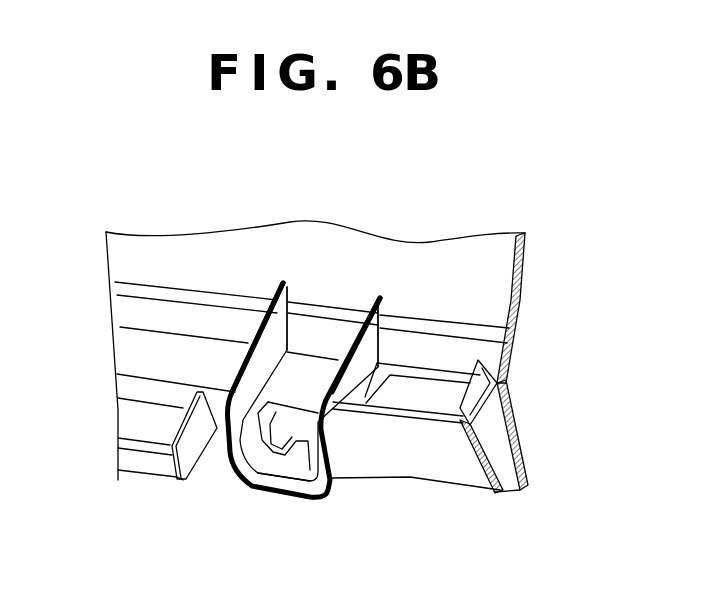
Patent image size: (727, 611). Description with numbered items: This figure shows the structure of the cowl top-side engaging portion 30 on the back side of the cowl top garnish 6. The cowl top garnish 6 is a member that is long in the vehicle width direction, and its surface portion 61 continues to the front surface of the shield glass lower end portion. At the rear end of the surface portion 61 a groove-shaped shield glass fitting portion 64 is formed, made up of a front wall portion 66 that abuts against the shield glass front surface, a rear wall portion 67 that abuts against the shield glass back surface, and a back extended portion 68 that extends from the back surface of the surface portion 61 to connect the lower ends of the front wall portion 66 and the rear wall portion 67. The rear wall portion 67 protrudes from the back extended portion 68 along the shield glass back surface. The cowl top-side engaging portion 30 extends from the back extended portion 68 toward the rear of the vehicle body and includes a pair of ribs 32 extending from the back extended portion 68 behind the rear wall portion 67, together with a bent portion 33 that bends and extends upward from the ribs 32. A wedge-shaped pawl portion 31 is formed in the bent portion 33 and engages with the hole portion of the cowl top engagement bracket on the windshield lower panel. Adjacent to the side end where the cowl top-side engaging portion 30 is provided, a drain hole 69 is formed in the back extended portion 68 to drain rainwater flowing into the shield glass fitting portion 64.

The cowl top garnish 6 is at (448, 256).
The cowl top-side engaging portion 30 is at (204, 382).
The pawl portion 31 is at (282, 457).
The ribs 32 is at (268, 353).
The bent portion 33 is at (302, 482).
The surface portion 61 is at (500, 308).
The shield glass fitting portion 64 is at (526, 405).
The front wall portion 66 is at (520, 427).
The rear wall portion 67 is at (535, 456).
The back extended portion 68 is at (387, 383).
The drain hole 69 is at (432, 400).